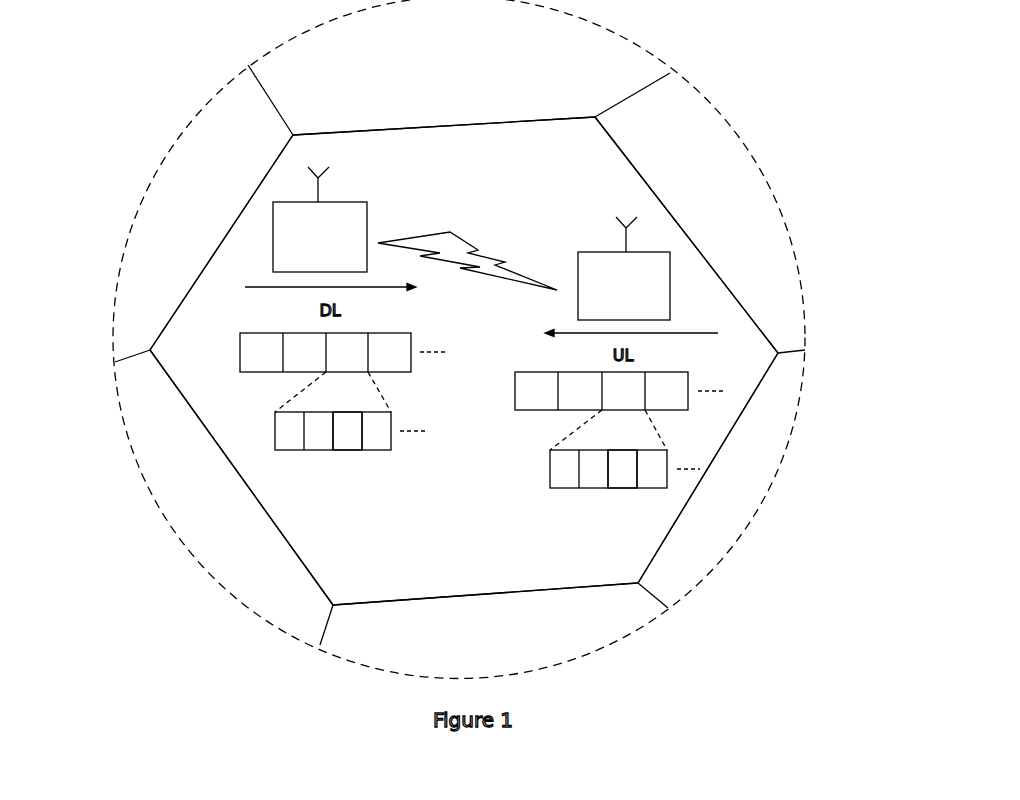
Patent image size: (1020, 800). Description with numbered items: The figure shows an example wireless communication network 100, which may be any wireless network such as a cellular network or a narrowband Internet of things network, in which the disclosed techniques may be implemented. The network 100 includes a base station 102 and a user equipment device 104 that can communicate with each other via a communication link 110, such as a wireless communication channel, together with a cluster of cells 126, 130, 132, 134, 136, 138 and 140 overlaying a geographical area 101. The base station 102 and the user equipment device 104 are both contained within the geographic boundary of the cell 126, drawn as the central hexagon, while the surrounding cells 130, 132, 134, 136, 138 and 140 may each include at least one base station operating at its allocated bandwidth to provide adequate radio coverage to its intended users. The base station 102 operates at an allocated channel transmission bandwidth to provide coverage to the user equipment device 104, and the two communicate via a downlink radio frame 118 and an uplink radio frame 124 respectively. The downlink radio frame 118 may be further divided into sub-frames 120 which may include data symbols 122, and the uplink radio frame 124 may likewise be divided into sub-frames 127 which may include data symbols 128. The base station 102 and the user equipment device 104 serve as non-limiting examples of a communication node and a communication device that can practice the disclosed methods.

The wireless communication network 100 is at (824, 104).
The geographical area 101 is at (130, 222).
The base station 102 is at (306, 262).
The user equipment device 104 is at (610, 311).
The communication link 110 is at (462, 238).
The downlink radio frame 118 is at (243, 354).
The sub-frame 120 is at (273, 440).
The data symbol 122 is at (349, 448).
The uplink radio frame 124 is at (520, 393).
The cell 126 is at (466, 567).
The sub-frame 127 is at (550, 478).
The data symbol 128 is at (624, 489).
The cell 130 is at (173, 221).
The cell 132 is at (447, 80).
The cell 134 is at (706, 213).
The cell 136 is at (718, 506).
The cell 138 is at (479, 642).
The cell 140 is at (189, 516).